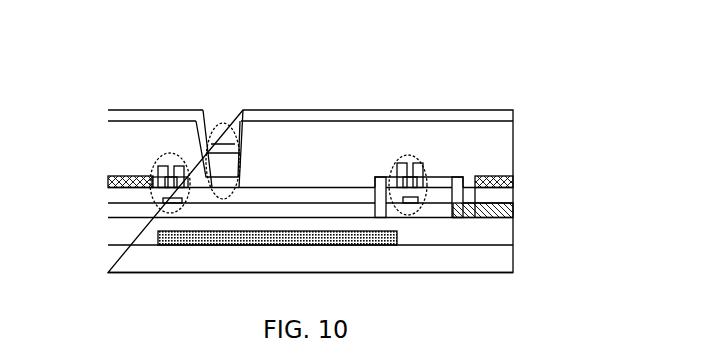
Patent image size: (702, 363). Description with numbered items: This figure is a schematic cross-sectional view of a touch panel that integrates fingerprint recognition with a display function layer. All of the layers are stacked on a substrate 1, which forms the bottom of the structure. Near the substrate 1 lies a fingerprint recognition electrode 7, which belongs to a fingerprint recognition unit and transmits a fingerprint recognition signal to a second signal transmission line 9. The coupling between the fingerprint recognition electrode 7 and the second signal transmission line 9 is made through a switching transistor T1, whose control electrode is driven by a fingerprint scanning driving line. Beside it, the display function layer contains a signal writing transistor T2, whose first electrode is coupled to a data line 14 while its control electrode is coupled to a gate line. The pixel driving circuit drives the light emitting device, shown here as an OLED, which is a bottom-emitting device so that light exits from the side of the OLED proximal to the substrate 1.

The substrate 1 is at (104, 261).
The fingerprint recognition electrode 7 is at (144, 235).
The second signal transmission line 9 is at (505, 222).
The data line 14 is at (120, 178).
The switching transistor T1 is at (410, 141).
The signal writing transistor T2 is at (142, 157).
The organic light emitting diode OLED is at (216, 109).